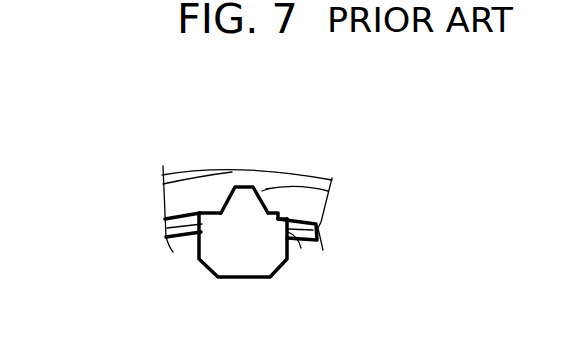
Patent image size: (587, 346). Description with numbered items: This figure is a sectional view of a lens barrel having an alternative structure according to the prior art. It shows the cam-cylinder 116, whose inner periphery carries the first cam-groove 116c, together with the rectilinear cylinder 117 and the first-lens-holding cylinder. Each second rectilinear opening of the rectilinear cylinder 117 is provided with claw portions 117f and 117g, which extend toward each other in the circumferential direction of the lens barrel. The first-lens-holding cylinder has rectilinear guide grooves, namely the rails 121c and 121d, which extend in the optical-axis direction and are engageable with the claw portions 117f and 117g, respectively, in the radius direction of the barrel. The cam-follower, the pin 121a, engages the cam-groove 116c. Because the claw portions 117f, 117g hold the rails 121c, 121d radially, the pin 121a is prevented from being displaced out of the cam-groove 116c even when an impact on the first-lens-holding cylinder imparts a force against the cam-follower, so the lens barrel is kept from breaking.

The cam-cylinder 116 is at (297, 183).
The first cam-groove 116c is at (260, 198).
The rectilinear cylinder 117 is at (316, 232).
The claw portion 117f is at (301, 248).
The claw portion 117g is at (170, 233).
The pin 121a is at (240, 202).
The rail 121c is at (277, 213).
The rail 121d is at (205, 215).